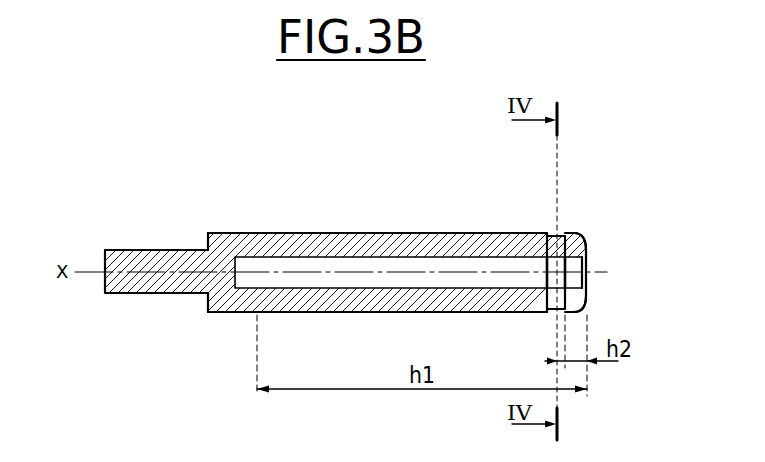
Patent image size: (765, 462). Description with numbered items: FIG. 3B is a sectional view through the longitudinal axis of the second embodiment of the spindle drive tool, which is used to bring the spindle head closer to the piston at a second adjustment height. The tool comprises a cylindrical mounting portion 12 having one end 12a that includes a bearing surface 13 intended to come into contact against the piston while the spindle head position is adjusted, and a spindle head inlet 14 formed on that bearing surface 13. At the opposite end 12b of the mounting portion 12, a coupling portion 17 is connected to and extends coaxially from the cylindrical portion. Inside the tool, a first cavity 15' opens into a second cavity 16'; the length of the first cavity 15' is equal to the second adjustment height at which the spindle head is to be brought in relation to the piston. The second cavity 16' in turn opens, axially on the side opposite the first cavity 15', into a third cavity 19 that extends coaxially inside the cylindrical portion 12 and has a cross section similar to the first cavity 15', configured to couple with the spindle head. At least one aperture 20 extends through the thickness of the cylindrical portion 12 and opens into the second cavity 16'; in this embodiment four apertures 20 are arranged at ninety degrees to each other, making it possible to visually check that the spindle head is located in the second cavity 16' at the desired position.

The mounting portion 12 is at (420, 228).
The end of the mounting portion 12a is at (532, 233).
The end of the cylindrical portion 12b is at (208, 233).
The bearing surface 13 is at (588, 298).
The spindle head inlet 14 is at (590, 262).
The first cavity 15' is at (590, 213).
The second cavity 16' is at (574, 228).
The coupling portion 17 is at (157, 300).
The third cavity 19 is at (472, 258).
The aperture 20 is at (548, 233).